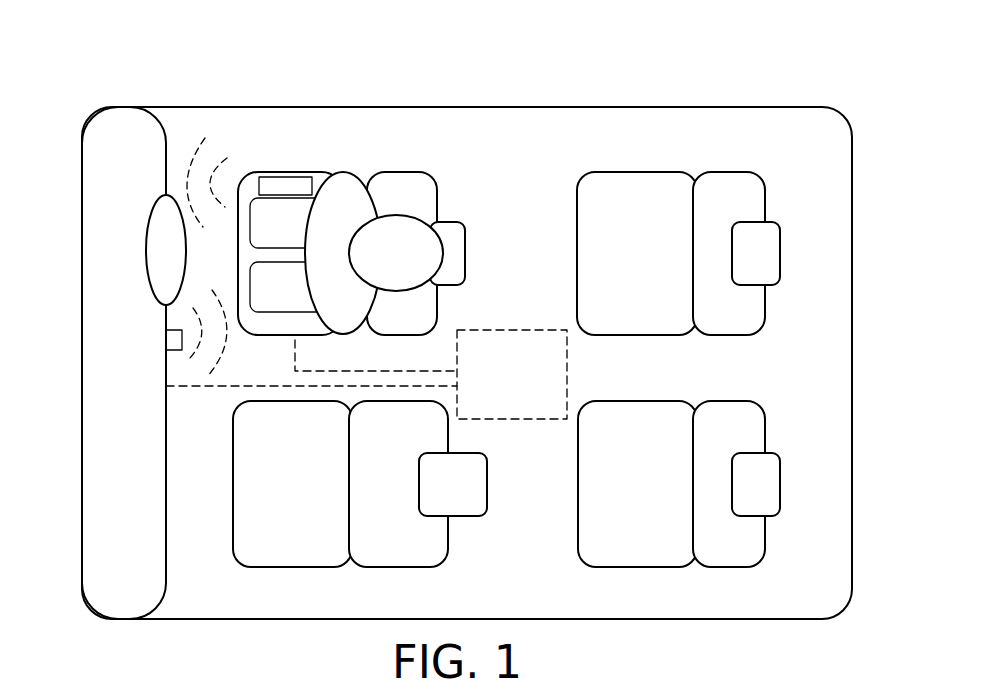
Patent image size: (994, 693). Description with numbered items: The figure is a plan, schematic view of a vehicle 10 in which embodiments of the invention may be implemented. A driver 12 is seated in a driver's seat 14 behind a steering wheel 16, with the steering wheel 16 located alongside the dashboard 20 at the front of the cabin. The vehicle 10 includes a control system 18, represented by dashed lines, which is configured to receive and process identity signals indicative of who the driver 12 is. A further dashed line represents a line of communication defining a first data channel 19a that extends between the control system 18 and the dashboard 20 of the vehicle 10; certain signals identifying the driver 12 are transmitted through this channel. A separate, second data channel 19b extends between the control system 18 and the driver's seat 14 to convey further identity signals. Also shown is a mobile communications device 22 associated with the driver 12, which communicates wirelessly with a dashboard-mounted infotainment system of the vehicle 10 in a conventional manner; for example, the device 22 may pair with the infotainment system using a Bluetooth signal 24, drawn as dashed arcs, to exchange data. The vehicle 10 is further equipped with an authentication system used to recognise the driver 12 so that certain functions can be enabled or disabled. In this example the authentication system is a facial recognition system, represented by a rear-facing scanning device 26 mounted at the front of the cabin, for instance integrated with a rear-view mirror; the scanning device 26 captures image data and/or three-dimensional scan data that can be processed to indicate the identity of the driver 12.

The vehicle 10 is at (736, 76).
The driver 12 is at (363, 228).
The driver's seat 14 is at (396, 172).
The steering wheel 16 is at (153, 253).
The control system 18 is at (526, 420).
The first data channel 19a is at (195, 386).
The second data channel 19b is at (295, 350).
The dashboard 20 is at (82, 135).
The mobile communications device 22 is at (287, 177).
The Bluetooth signal 24 is at (200, 139).
The scanning device 26 is at (167, 353).